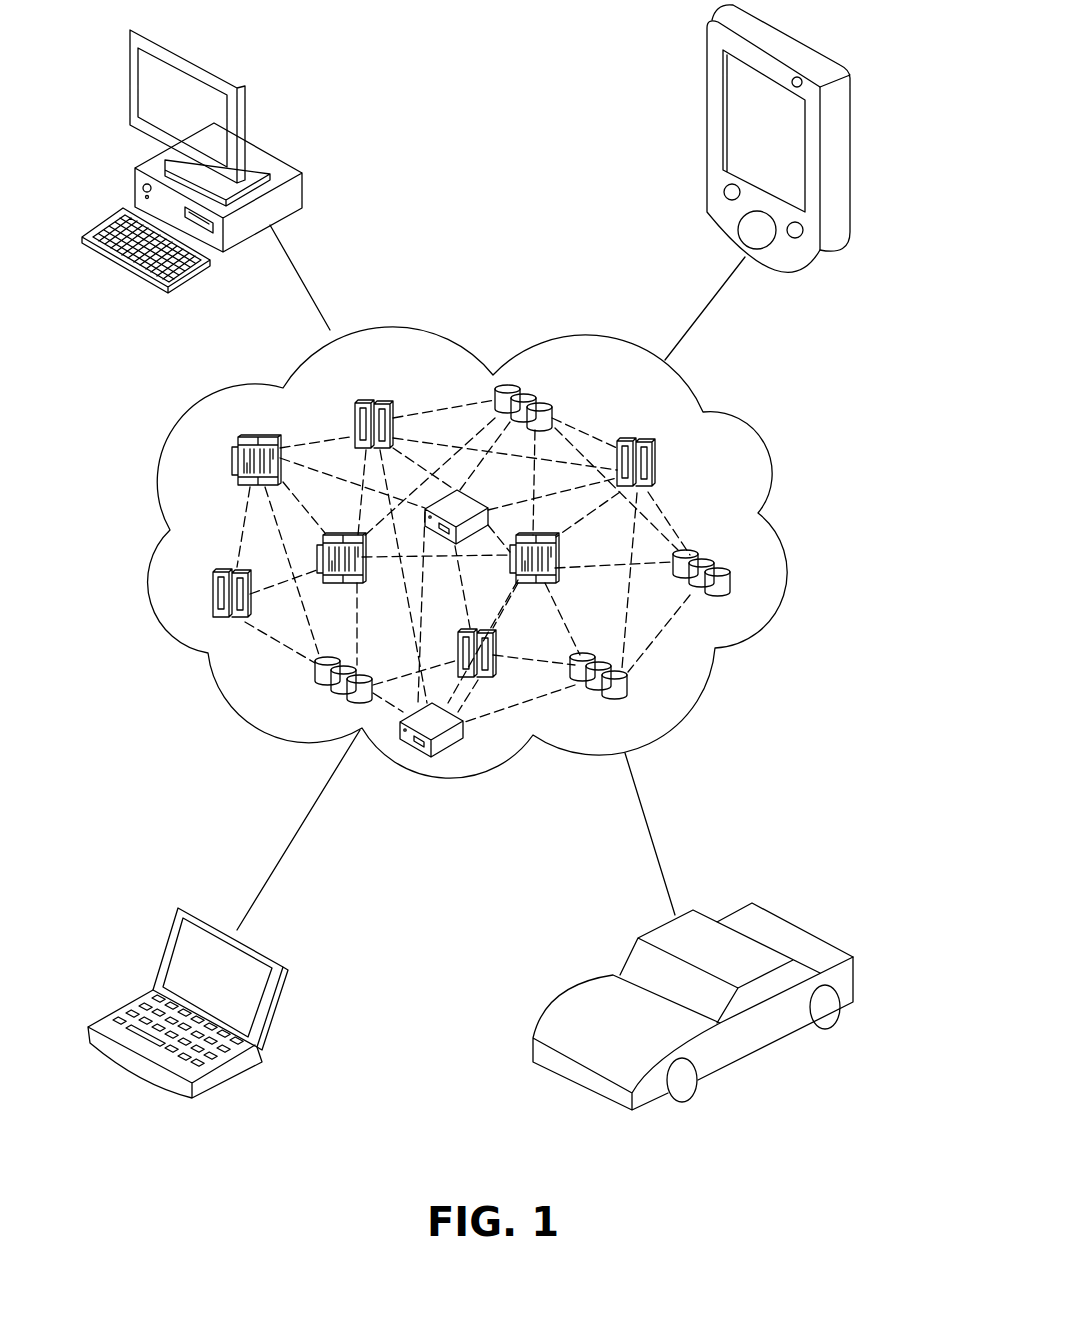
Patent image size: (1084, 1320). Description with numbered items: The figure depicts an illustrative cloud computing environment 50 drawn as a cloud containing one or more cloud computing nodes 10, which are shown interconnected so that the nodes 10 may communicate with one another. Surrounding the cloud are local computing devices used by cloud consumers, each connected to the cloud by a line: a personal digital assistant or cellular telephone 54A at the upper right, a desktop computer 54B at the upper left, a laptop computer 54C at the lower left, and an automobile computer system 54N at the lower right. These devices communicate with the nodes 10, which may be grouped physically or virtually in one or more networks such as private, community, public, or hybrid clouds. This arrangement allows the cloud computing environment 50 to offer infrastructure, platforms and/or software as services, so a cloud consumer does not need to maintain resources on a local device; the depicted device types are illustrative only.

The cloud computing nodes 10 is at (499, 557).
The cloud computing environment 50 is at (760, 633).
The personal digital assistant (PDA) or cellular telephone 54A is at (705, 83).
The desktop computer 54B is at (303, 188).
The laptop computer 54C is at (287, 977).
The automobile computer system 54N is at (855, 975).